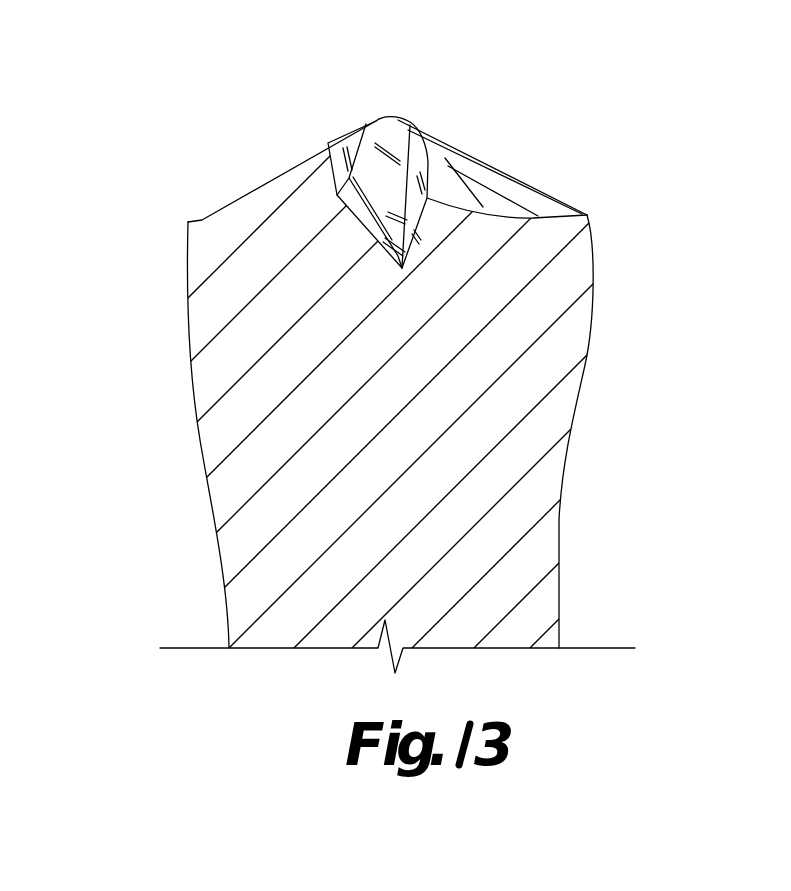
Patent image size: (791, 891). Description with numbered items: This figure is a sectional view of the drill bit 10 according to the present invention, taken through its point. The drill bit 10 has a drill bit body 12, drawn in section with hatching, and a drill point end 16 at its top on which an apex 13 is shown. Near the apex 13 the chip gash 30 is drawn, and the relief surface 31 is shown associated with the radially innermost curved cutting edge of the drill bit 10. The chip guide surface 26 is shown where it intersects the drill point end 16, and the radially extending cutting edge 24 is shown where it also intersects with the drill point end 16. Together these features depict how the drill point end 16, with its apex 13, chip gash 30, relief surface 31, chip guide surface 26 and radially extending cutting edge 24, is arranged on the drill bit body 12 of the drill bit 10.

The drill bit 10 is at (178, 265).
The drill bit body 12 is at (185, 310).
The apex 13 is at (388, 118).
The drill point end 16 is at (507, 167).
The radially extending cutting edge 24 is at (332, 141).
The chip guide surface 26 is at (445, 158).
The chip gash 30 is at (398, 154).
The relief surface 31 is at (355, 147).